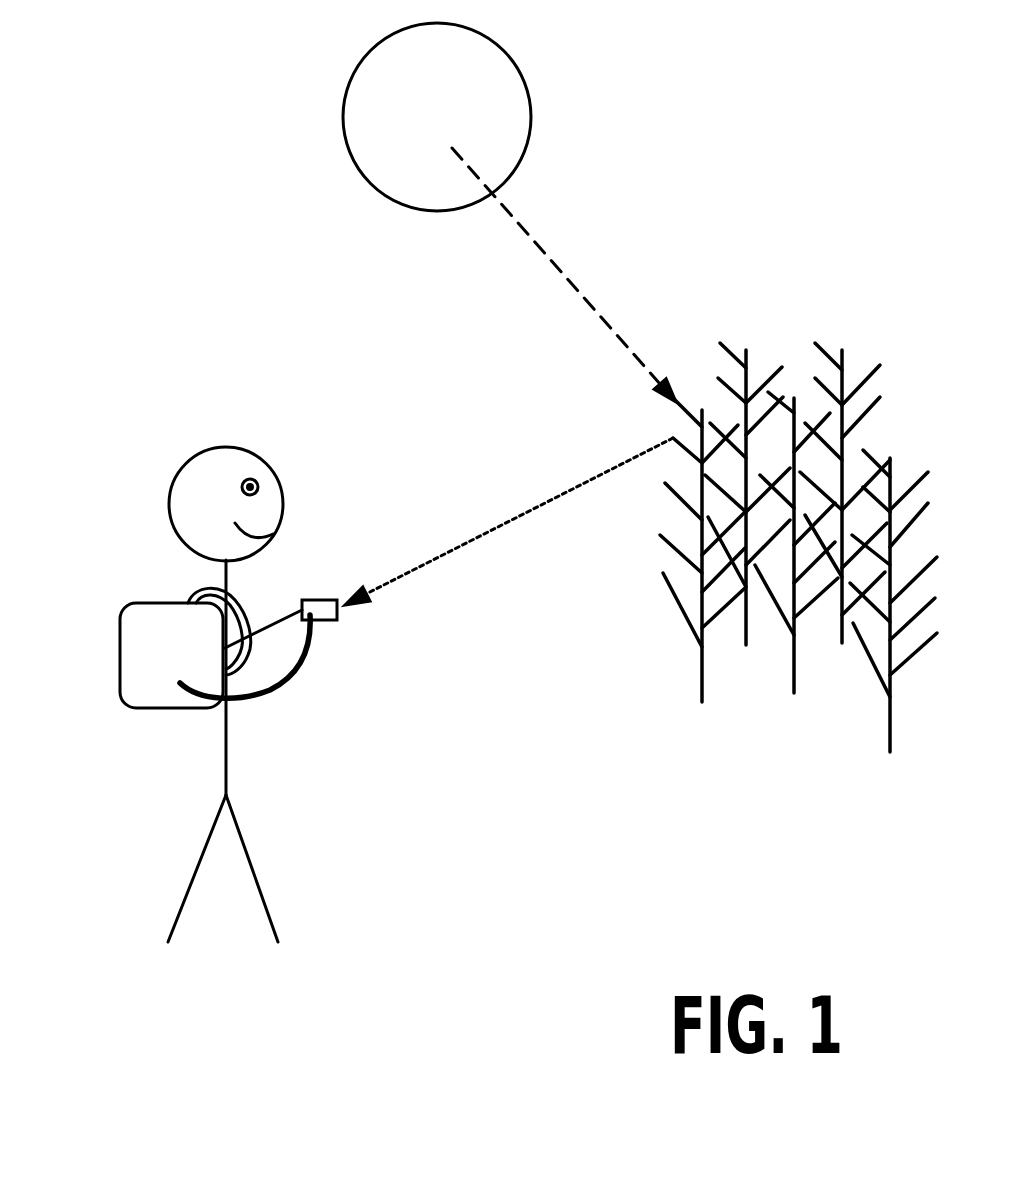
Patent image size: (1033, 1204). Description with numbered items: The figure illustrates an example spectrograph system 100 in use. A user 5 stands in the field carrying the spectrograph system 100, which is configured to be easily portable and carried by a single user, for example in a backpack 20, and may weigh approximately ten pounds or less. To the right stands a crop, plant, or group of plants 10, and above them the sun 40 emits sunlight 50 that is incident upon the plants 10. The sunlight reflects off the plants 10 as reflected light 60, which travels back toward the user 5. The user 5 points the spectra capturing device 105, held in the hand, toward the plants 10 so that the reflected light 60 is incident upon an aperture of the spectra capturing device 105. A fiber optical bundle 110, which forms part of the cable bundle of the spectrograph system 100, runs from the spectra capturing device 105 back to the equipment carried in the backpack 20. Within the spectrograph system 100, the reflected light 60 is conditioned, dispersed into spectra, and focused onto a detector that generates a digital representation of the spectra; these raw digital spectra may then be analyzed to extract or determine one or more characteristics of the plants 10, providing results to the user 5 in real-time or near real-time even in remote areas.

The sun 40 is at (487, 112).
The sunlight 50 is at (564, 275).
The plants 10 is at (798, 482).
The reflected light 60 is at (509, 538).
The user 5 is at (243, 462).
The spectrograph system 100 is at (129, 606).
The backpack 20 is at (266, 604).
The spectra capturing device 105 is at (371, 653).
The fiber optical bundle 110 is at (297, 685).